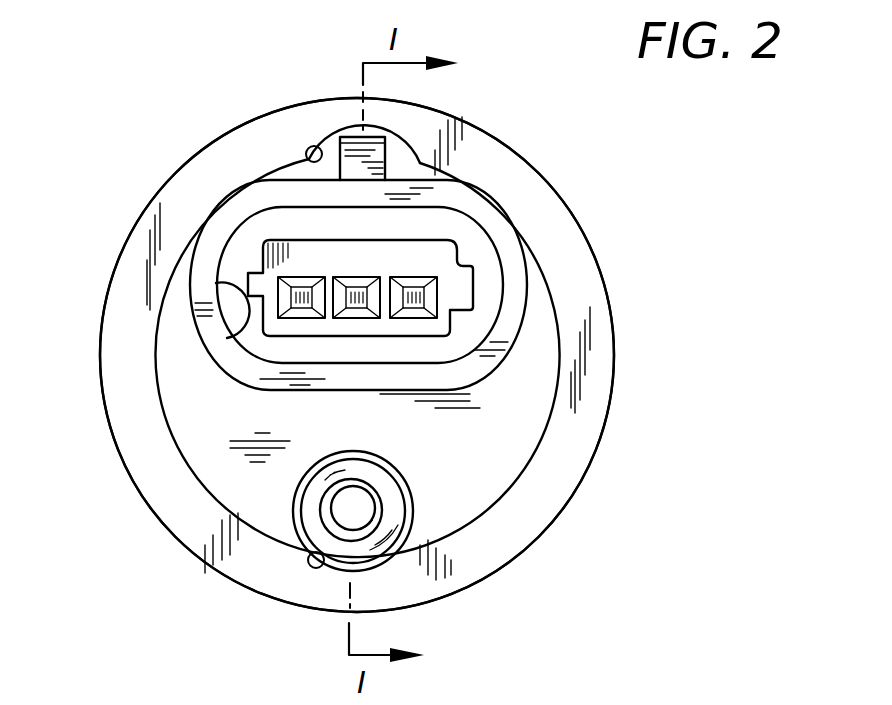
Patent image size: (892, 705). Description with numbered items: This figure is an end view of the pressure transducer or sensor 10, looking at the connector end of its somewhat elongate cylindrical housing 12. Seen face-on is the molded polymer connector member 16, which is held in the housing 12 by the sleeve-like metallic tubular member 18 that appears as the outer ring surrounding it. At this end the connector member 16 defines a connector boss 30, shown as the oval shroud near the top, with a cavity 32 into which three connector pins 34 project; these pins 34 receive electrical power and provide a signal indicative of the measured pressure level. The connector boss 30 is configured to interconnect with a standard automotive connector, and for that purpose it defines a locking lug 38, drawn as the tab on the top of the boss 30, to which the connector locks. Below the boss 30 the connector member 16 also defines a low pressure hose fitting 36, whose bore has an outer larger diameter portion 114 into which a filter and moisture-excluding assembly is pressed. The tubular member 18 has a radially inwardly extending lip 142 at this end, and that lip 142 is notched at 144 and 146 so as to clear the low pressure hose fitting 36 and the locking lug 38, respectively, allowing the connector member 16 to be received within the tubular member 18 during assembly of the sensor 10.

The pressure transducer or sensor 10 is at (686, 434).
The housing 12 is at (600, 378).
The connector member 16 is at (187, 412).
The tubular member 18 is at (574, 494).
The connector boss 30 is at (520, 288).
The cavity 32 is at (214, 281).
The connector pins 34 is at (337, 277).
The low pressure hose fitting 36 is at (413, 503).
The locking lug 38 is at (355, 136).
The outer larger diameter portion of bore 114 is at (340, 509).
The radially inwardly extending lip 142 is at (600, 311).
The notch 144 is at (325, 568).
The notch 146 is at (306, 150).